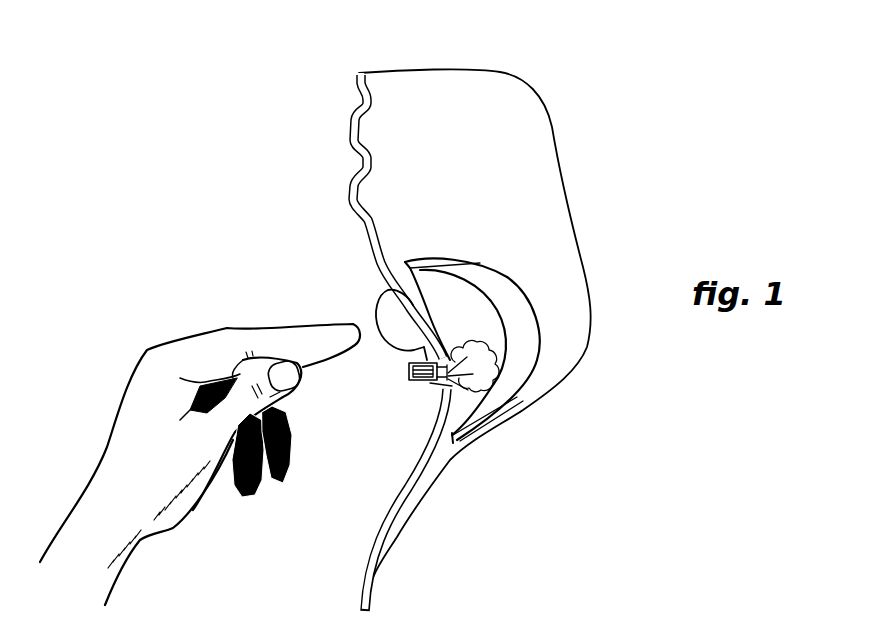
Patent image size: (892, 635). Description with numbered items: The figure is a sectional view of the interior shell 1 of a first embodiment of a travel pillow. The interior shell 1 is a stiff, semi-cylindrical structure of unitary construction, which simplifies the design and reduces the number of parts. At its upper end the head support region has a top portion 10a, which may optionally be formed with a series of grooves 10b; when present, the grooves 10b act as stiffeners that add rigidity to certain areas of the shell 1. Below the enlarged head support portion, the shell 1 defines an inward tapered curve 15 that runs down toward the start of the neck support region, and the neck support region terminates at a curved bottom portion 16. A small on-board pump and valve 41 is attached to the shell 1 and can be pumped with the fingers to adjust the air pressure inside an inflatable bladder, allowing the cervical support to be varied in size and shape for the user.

The interior shell 1 is at (517, 90).
The top portion 10a is at (490, 165).
The grooves 10b is at (498, 208).
The inward tapered curve 15 is at (432, 400).
The curved bottom portion 16 is at (372, 602).
The pump and valve 41 is at (387, 312).